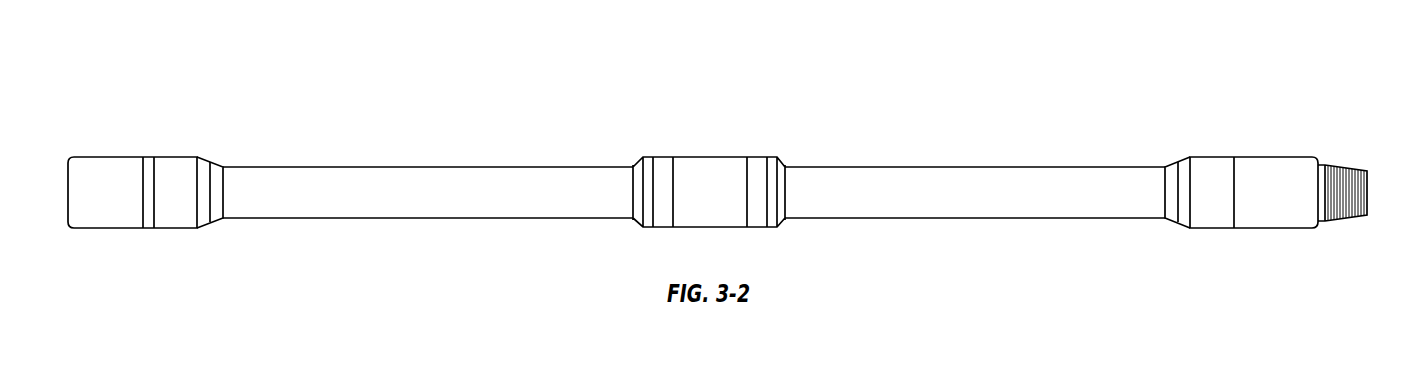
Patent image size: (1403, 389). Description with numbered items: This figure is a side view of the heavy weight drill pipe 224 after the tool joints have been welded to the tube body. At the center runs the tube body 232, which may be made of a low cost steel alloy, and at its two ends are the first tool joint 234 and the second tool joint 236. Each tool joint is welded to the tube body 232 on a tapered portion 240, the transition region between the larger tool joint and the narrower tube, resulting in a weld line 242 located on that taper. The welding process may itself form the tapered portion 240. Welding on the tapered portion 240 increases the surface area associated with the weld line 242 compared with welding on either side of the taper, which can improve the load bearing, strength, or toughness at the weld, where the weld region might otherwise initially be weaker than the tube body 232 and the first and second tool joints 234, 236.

The heavy weight drill pipe 224 is at (776, 69).
The tube body 232 is at (329, 183).
The first tool joint 234 is at (103, 183).
The second tool joint 236 is at (1273, 183).
The tapered portion 240 is at (217, 173).
The weld line 242 is at (212, 197).